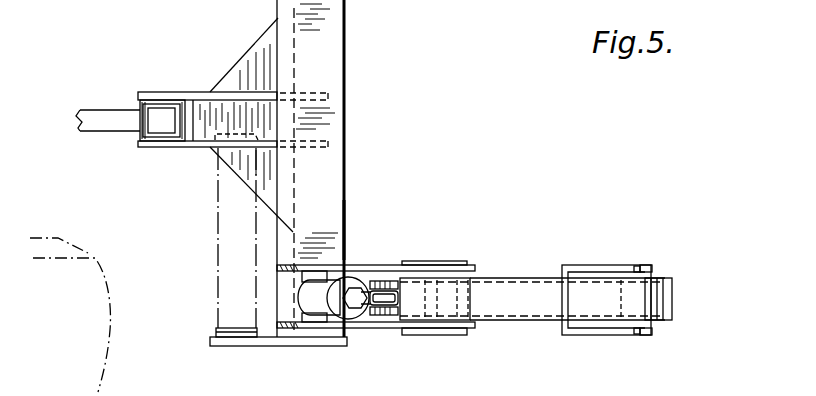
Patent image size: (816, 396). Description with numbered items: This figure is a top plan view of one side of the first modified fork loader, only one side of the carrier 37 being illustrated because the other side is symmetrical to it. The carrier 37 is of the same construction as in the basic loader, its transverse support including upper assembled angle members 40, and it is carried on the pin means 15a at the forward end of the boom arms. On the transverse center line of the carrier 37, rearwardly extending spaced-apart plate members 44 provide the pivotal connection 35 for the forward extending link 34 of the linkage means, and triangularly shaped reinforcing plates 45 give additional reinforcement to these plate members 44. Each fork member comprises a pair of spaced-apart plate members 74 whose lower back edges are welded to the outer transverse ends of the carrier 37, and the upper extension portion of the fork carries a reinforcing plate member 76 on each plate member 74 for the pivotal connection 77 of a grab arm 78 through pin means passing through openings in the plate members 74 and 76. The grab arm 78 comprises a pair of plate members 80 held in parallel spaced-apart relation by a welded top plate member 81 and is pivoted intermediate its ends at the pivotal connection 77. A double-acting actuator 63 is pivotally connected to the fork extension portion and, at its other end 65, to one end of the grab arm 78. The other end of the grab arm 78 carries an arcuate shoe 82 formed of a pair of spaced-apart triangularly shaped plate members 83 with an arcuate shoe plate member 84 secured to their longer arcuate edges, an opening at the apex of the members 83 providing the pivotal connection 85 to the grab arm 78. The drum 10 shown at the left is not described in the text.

The drum 10 is at (105, 385).
The pin means 15a is at (218, 293).
The forward extending link 34 is at (98, 118).
The pivotal connection 35 is at (143, 136).
The carrier member 37 is at (348, 180).
The angle members 40 is at (347, 222).
The spaced-apart plate members 44 is at (197, 92).
The reinforcing plates 45 is at (255, 52).
The double-acting actuator 63 is at (318, 306).
The actuator end 65 is at (390, 294).
The plate members 74 is at (357, 266).
The reinforcing plate member 76 is at (430, 264).
The pivotal connection 77 is at (455, 300).
The grab arm 78 is at (488, 290).
The plate members 80 is at (383, 283).
The top plate member 81 is at (530, 292).
The arcuate shoe 82 is at (602, 265).
The plate members 83 is at (660, 268).
The arcuate shoe plate member 84 is at (653, 334).
The pivotal connection 85 is at (648, 268).